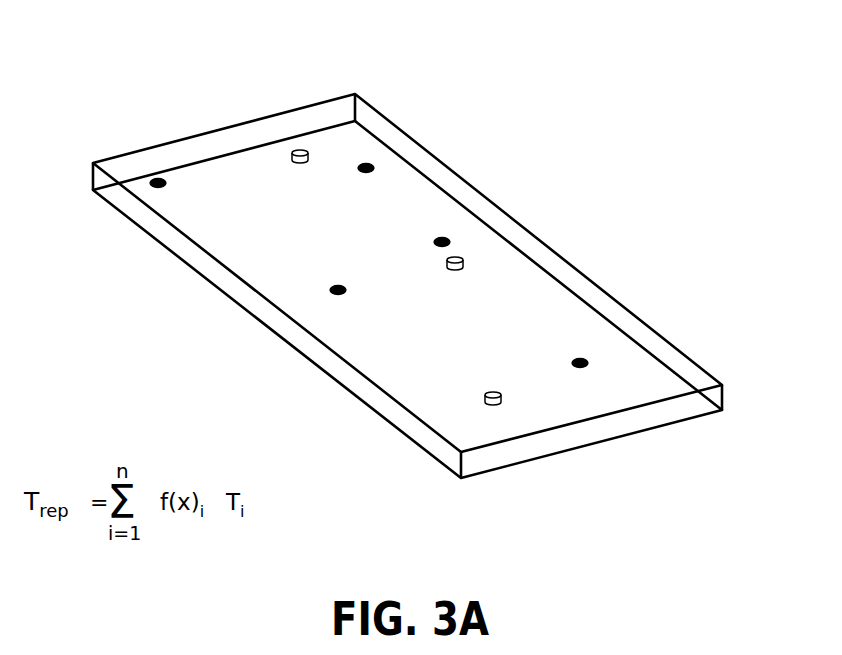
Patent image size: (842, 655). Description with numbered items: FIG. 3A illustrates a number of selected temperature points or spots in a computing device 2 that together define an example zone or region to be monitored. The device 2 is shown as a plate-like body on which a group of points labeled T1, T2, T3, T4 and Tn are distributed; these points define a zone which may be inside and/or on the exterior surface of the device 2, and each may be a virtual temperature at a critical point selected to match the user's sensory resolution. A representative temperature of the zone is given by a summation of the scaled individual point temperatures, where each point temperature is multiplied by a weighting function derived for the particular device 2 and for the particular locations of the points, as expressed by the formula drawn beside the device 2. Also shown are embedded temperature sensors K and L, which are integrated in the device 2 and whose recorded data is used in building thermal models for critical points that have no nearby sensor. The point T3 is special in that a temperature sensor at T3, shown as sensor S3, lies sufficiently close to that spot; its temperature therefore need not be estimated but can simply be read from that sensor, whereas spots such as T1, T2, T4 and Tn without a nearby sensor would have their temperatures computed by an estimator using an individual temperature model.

The device 2 is at (195, 257).
The temperature point T1 is at (130, 170).
The temperature point T2 is at (393, 156).
The temperature point T3 is at (477, 230).
The temperature point T4 is at (314, 309).
The temperature point Tn is at (598, 384).
The temperature sensor K is at (300, 150).
The temperature sensor at T3 S3 is at (462, 256).
The temperature sensor L is at (493, 403).